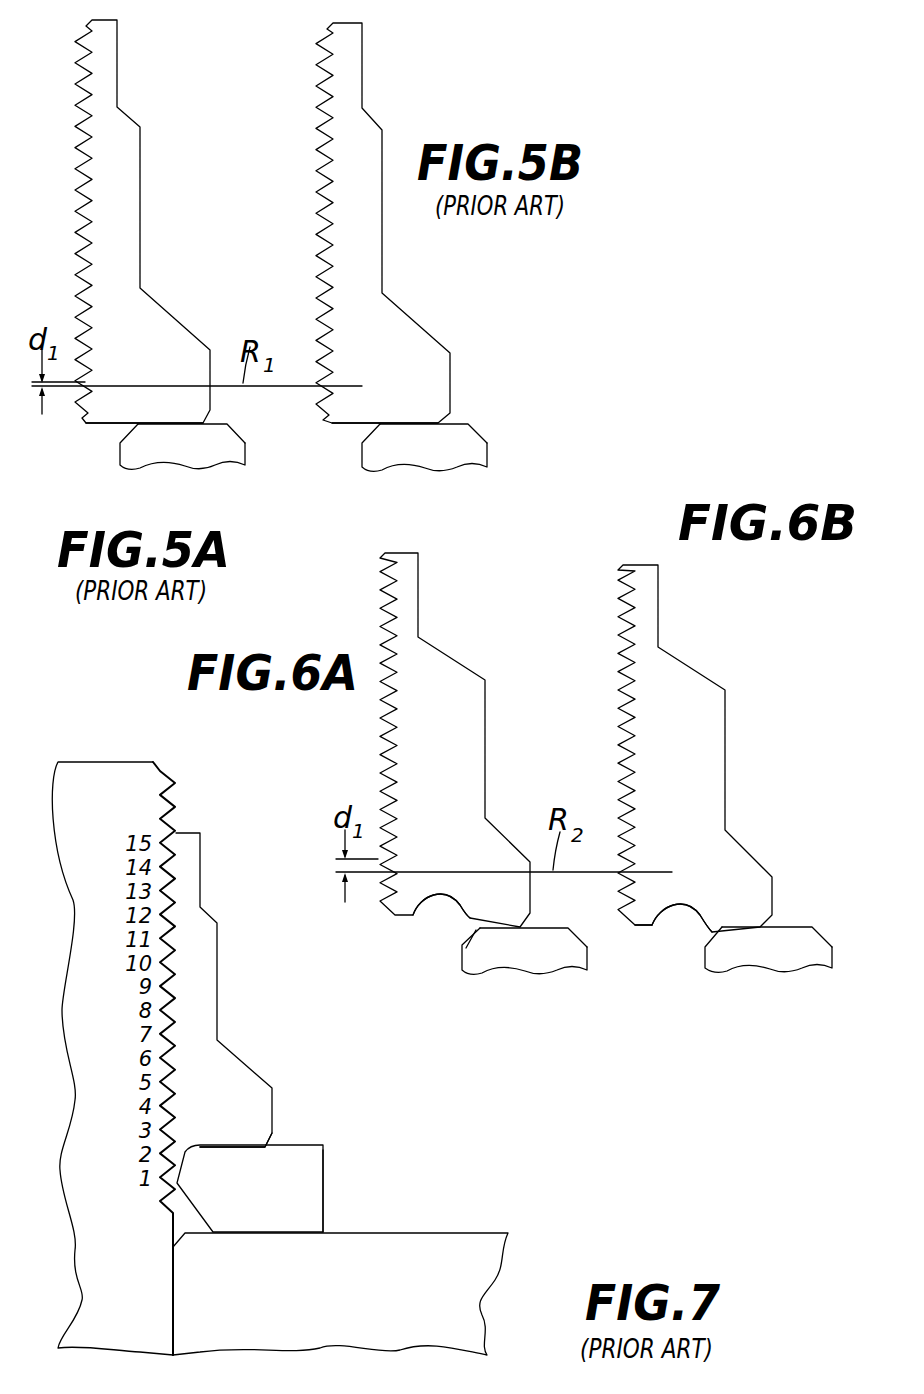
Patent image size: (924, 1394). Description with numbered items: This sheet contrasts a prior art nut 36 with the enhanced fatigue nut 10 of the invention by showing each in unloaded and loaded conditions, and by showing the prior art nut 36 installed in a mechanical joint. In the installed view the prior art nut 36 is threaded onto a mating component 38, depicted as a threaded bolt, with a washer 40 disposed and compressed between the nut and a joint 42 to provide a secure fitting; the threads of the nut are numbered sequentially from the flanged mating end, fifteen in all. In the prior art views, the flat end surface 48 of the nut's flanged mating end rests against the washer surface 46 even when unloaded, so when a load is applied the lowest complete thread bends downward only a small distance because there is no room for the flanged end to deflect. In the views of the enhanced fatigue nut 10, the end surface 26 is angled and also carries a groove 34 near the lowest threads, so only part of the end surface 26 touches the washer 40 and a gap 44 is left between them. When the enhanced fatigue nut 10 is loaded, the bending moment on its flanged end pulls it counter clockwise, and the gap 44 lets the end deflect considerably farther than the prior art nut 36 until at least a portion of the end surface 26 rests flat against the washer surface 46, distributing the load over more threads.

In FIG. 6A, the enhanced fatigue nut 10 is at (468, 633).
In FIG. 6B, the enhanced fatigue nut 10 is at (695, 633).
In FIG. 6A, the end surface 26 is at (470, 925).
In FIG. 6B, the end surface 26 is at (715, 927).
In FIG. 6B, the groove 34 is at (678, 915).
In FIG. 5A, the prior art nut 36 is at (147, 85).
In FIG. 5B, the prior art nut 36 is at (388, 85).
In FIG. 7, the prior art nut 36 is at (232, 997).
In FIG. 7, the mating component 38 is at (87, 937).
In FIG. 5A, the washer 40 is at (212, 453).
In FIG. 5B, the washer 40 is at (462, 453).
In FIG. 6A, the washer 40 is at (565, 955).
In FIG. 6B, the washer 40 is at (787, 953).
In FIG. 7, the washer 40 is at (312, 1190).
In FIG. 7, the joint 42 is at (485, 1285).
In FIG. 6A, the gap 44 is at (475, 935).
In FIG. 5A, the washer surface 46 is at (217, 422).
In FIG. 5B, the washer surface 46 is at (460, 422).
In FIG. 6A, the washer surface 46 is at (540, 927).
In FIG. 6B, the washer surface 46 is at (782, 927).
In FIG. 7, the washer surface 46 is at (280, 1145).
In FIG. 5A, the end surface 48 is at (100, 425).
In FIG. 5B, the end surface 48 is at (408, 422).
In FIG. 7, the end surface 48 is at (220, 1145).